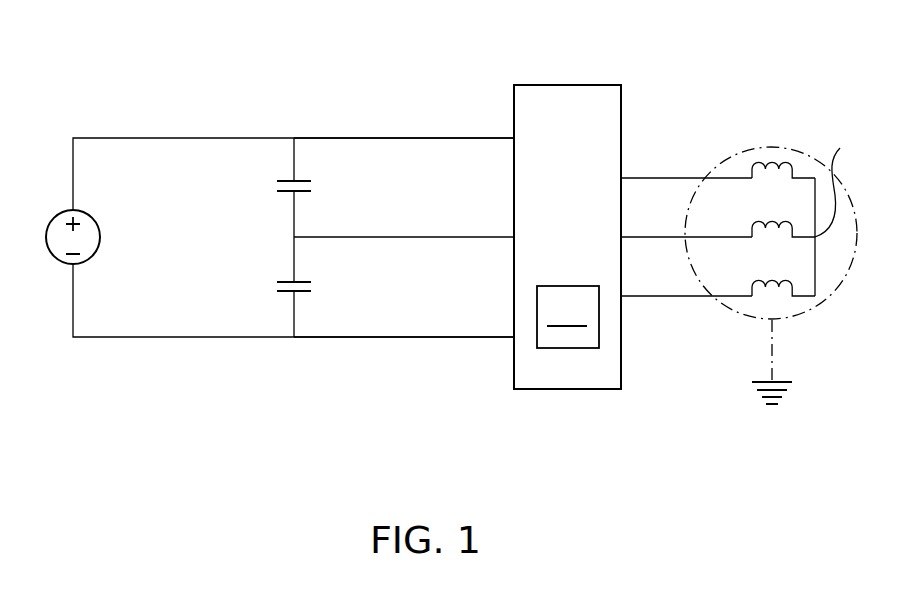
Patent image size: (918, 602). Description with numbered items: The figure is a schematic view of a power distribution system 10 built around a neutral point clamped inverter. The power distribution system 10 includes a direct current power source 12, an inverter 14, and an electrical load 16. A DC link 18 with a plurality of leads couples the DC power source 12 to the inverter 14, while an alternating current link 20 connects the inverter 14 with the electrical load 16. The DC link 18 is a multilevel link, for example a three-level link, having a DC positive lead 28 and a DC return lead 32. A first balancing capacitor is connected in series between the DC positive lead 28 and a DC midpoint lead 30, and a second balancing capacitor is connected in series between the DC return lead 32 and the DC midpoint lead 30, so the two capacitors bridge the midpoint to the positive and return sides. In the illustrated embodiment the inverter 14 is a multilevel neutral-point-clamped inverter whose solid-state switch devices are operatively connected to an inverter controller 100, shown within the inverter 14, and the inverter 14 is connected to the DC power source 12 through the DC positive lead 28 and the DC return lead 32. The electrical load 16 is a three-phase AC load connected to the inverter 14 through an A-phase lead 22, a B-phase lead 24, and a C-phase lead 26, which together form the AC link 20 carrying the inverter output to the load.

The power distribution system 10 is at (256, 393).
The DC power source 12 is at (67, 262).
The inverter 14 is at (560, 85).
The electrical load 16 is at (735, 313).
The DC link 18 is at (342, 80).
The AC link 20 is at (703, 64).
The A-phase lead 22 is at (662, 178).
The B-phase lead 24 is at (642, 237).
The C-phase lead 26 is at (655, 296).
The DC positive lead 28 is at (403, 138).
The DC midpoint lead 30 is at (453, 237).
The DC return lead 32 is at (403, 337).
The inverter controller 100 is at (568, 317).